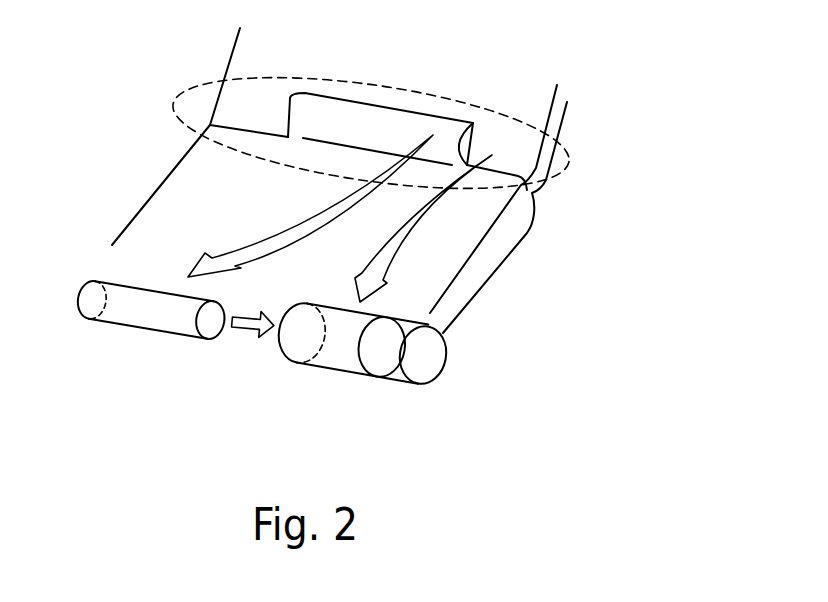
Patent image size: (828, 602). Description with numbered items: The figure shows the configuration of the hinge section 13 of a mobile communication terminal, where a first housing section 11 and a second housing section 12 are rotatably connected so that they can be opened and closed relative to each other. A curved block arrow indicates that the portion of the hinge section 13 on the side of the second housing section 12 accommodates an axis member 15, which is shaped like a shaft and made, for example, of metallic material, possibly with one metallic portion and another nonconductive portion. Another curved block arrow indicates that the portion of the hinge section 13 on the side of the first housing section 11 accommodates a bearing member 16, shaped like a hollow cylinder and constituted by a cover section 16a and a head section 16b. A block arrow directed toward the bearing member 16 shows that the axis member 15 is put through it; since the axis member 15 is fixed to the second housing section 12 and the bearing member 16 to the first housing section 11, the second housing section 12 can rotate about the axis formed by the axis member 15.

The first housing section 11 is at (233, 45).
The second housing section 12 is at (108, 206).
The hinge section 13 is at (570, 160).
The axis member 15 is at (140, 328).
The bearing member 16 is at (399, 404).
The cover section 16a is at (338, 373).
The head section 16b is at (443, 362).